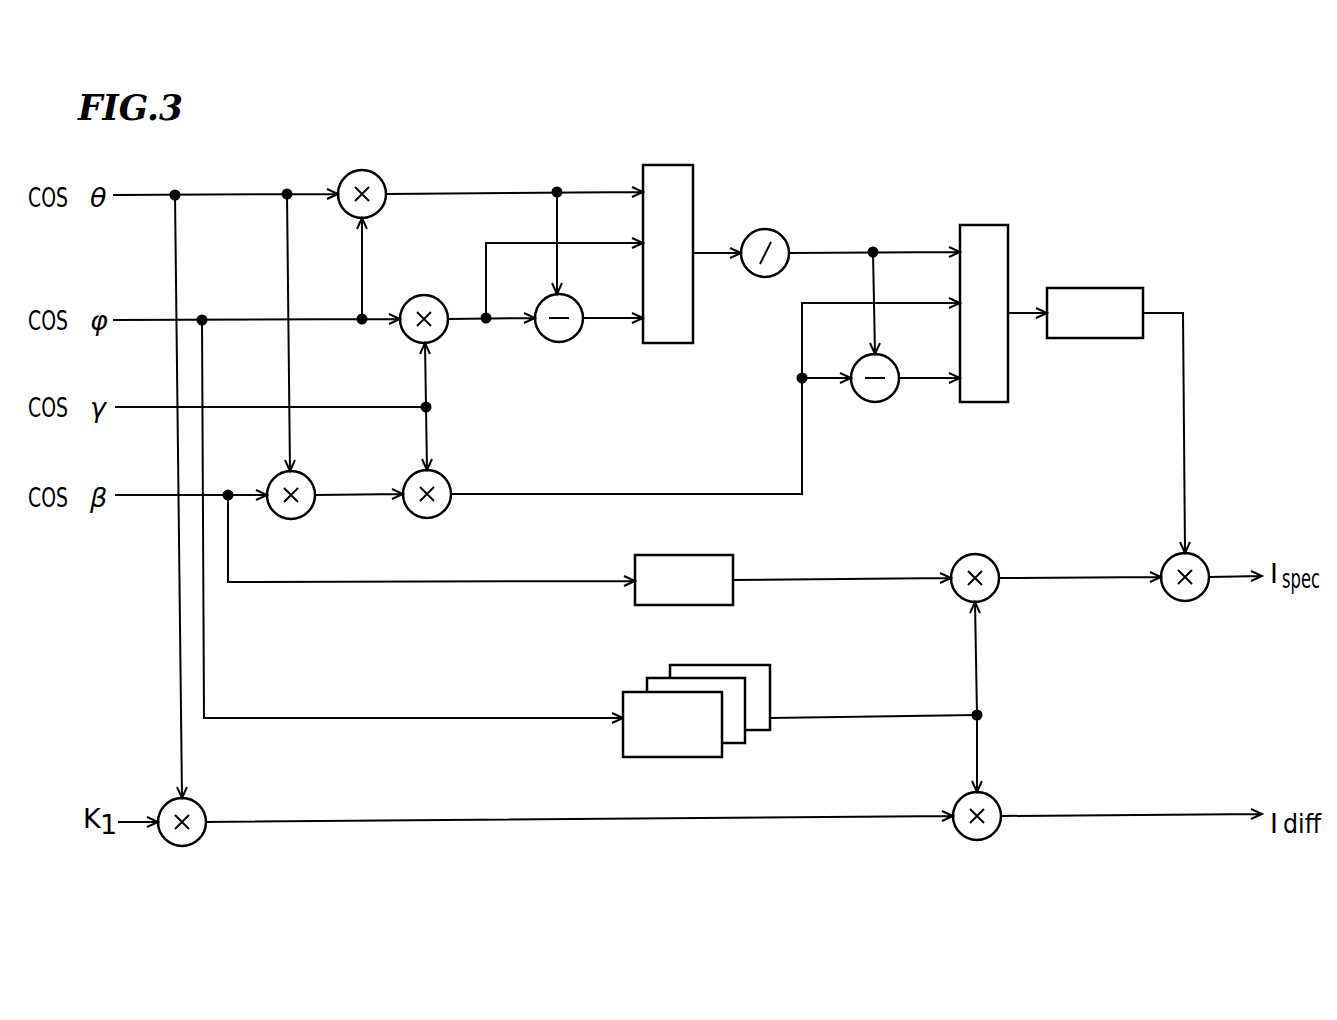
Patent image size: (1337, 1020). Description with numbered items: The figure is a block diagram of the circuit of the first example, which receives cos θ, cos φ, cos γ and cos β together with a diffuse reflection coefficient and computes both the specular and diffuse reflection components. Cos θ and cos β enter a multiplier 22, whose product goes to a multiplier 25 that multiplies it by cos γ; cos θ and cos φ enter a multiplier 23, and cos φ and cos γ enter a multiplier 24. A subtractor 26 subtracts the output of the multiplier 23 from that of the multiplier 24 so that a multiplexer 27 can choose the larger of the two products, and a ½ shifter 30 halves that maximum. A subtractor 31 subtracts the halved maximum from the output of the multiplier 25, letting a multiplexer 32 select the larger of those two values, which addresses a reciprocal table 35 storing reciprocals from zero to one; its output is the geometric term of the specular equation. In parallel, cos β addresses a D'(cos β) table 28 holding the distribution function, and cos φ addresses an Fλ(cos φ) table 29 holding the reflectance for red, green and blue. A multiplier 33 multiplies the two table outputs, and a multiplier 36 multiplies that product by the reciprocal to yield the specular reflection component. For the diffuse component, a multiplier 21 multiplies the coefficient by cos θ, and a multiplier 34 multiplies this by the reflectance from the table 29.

The multiplier 21 is at (197, 802).
The multiplier 22 is at (306, 519).
The multiplier 23 is at (379, 176).
The multiplier 24 is at (441, 342).
The multiplier 25 is at (444, 476).
The subtractor 26 is at (576, 340).
The multiplexer 27 is at (663, 165).
The D'(cos β) table 28 is at (695, 555).
The Fλ(cos φ) table 29 is at (733, 665).
The ½ shifter 30 is at (774, 230).
The subtractor 31 is at (893, 399).
The multiplexer 32 is at (980, 225).
The multiplier 33 is at (991, 558).
The multiplier 34 is at (992, 796).
The reciprocal table 35 is at (1097, 288).
The multiplier 36 is at (1186, 601).